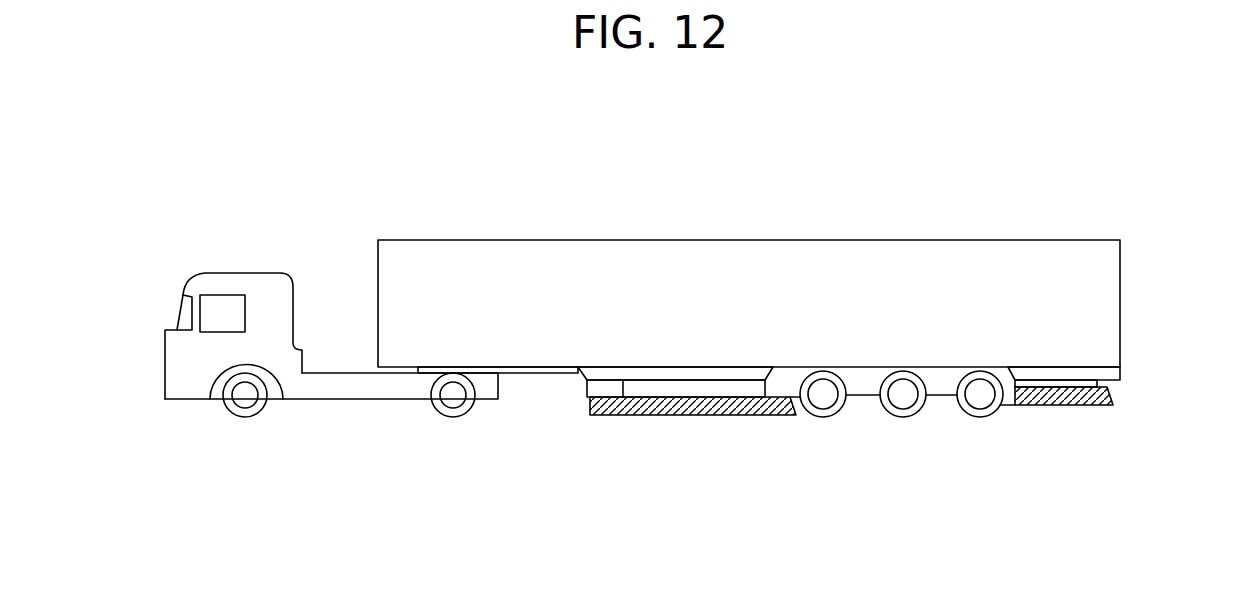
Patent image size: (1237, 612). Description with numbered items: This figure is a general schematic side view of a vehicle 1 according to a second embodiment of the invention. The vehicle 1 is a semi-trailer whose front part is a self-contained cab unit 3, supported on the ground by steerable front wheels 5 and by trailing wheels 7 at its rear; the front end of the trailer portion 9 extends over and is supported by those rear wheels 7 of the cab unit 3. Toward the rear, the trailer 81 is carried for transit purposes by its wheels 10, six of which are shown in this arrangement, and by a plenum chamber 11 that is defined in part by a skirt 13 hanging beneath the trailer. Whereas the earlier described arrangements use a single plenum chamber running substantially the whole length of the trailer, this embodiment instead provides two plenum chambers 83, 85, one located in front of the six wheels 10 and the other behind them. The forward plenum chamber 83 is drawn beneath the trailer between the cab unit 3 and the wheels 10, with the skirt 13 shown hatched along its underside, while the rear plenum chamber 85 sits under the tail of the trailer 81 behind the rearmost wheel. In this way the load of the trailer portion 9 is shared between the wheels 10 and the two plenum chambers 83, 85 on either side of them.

The vehicle 1 is at (241, 262).
The cab unit 3 is at (178, 356).
The steerable front wheels 5 is at (227, 406).
The trailing wheels 7 is at (437, 410).
The trailer portion 9 is at (1122, 272).
The trailer 81 is at (777, 307).
The plenum chamber 83 is at (638, 417).
The plenum chamber 11 is at (679, 422).
The skirt 13 is at (730, 416).
The wheels 10 is at (980, 417).
The plenum chamber 85 is at (1062, 406).